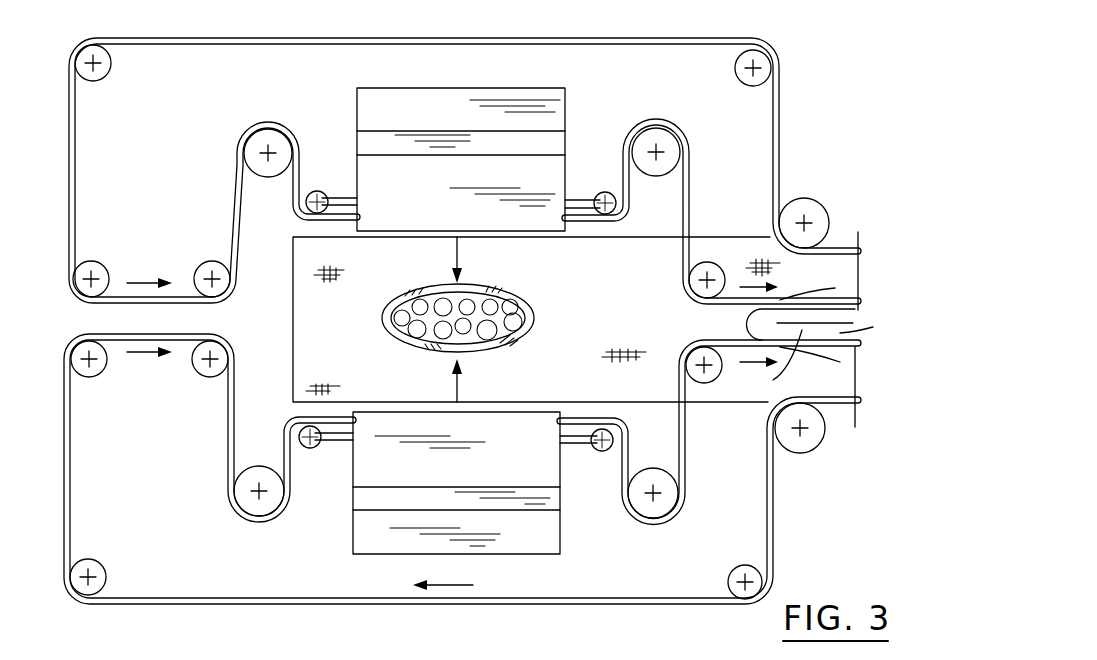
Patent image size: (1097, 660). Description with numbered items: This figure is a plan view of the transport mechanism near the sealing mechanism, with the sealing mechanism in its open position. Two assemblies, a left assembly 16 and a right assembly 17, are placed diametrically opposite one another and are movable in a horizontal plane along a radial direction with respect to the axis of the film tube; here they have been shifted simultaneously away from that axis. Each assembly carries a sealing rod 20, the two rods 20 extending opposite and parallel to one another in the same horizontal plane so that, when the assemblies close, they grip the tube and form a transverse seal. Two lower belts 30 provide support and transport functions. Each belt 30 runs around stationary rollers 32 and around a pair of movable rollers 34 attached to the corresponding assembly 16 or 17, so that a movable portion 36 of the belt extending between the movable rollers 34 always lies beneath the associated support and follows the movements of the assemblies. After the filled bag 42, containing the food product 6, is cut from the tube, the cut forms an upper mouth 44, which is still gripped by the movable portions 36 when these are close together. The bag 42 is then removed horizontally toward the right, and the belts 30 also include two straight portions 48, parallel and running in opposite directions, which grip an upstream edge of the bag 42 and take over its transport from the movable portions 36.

The food product 6 is at (496, 300).
The left assembly 16 is at (552, 113).
The right assembly 17 is at (538, 538).
The sealing rod 20 is at (398, 215).
The lower belt 30 is at (694, 196).
The stationary roller 32 is at (262, 135).
The movable roller 34 is at (318, 190).
The movable portion of the belt 36 is at (589, 228).
The bag 42 is at (545, 317).
The upper mouth 44 is at (386, 330).
The straight portion 48 is at (842, 305).